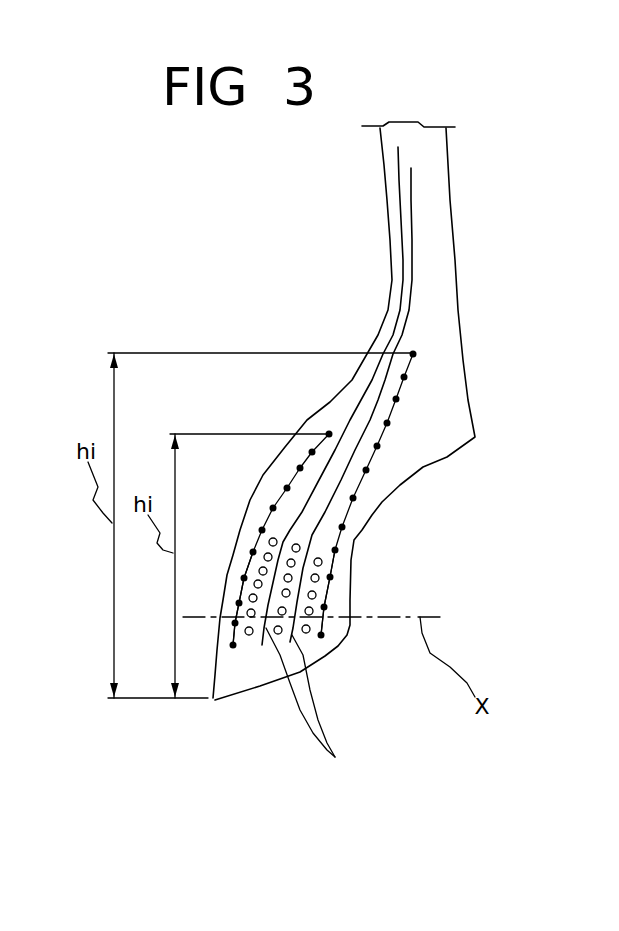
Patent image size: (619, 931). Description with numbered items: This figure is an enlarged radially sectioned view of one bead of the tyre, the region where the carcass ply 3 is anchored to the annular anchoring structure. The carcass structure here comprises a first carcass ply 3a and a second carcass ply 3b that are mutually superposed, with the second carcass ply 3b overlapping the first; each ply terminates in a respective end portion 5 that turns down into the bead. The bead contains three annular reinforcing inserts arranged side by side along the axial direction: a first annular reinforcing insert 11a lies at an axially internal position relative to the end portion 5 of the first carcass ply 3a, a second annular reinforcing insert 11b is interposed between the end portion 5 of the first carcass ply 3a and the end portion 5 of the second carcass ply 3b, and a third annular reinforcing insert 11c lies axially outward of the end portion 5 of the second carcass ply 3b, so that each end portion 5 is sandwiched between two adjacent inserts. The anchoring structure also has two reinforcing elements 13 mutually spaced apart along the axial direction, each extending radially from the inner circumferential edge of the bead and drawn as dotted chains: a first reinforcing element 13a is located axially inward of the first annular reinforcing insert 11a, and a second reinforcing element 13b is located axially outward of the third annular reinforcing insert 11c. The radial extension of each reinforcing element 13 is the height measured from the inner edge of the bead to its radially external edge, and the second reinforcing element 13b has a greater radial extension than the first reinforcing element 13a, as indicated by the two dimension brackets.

The carcass ply 3 is at (405, 152).
The first carcass ply 3a is at (405, 248).
The second carcass ply 3b is at (417, 272).
The end portion 5 is at (308, 707).
The first annular reinforcing insert 11a is at (248, 636).
The second annular reinforcing insert 11b is at (295, 546).
The third annular reinforcing insert 11c is at (308, 635).
The reinforcing element 13 is at (283, 490).
The first reinforcing element 13a is at (233, 635).
The second reinforcing element 13b is at (328, 590).